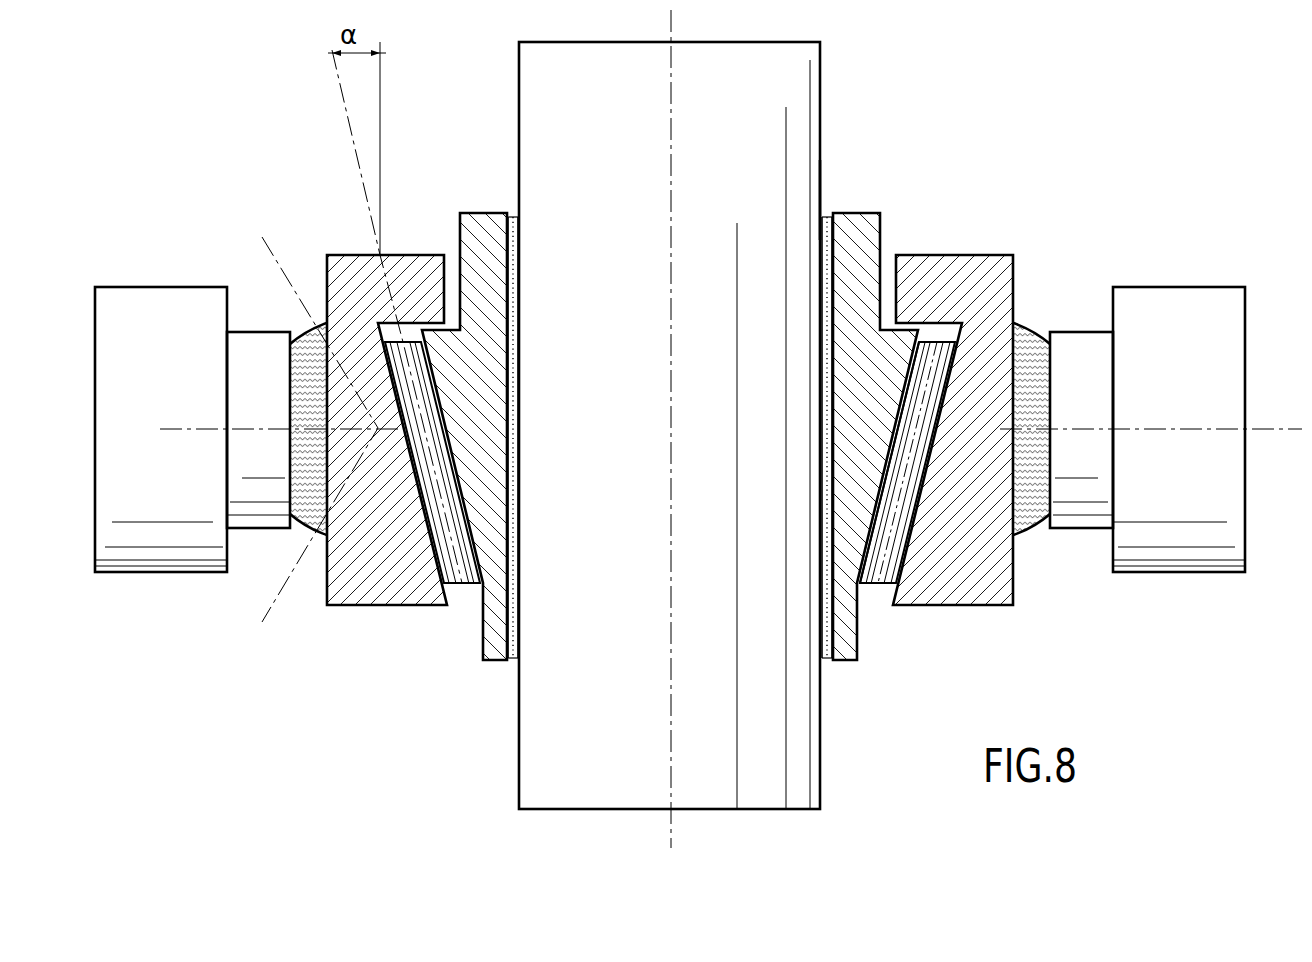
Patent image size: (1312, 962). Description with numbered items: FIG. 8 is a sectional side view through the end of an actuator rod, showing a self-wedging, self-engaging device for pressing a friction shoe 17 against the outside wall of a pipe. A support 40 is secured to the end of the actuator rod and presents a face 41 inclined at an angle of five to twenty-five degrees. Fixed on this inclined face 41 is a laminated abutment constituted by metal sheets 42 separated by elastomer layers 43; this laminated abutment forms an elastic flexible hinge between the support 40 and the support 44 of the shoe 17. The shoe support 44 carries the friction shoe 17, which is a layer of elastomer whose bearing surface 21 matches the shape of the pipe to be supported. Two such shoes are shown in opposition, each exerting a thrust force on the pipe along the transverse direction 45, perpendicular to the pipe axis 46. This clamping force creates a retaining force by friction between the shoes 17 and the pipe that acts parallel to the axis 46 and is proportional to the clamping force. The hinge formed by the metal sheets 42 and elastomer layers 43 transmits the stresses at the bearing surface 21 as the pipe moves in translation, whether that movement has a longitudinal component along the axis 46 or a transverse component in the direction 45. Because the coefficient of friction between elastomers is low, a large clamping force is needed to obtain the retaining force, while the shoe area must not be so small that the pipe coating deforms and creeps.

The friction shoe 17 is at (828, 661).
The bearing surface 21 is at (824, 232).
The support 40 is at (338, 254).
The inclined face 41 is at (957, 340).
The metal sheets 42 is at (890, 585).
The elastomer layers 43 is at (860, 588).
The shoe support 44 is at (483, 213).
The transverse direction 45 is at (177, 428).
The pipe axis 46 is at (674, 833).